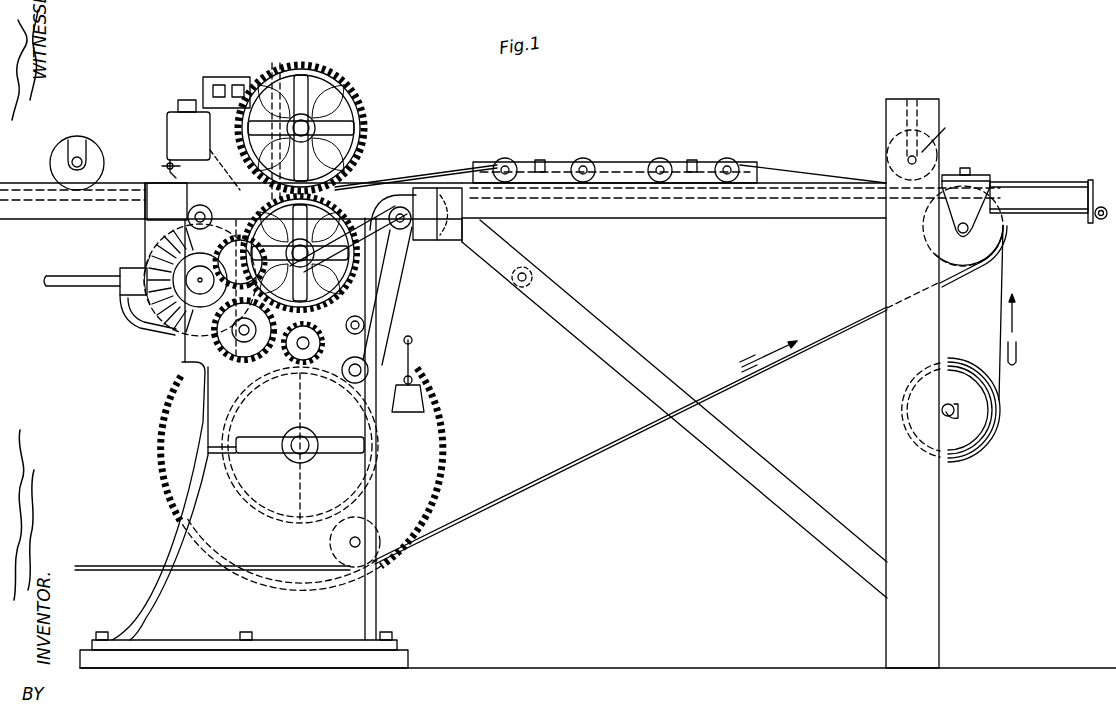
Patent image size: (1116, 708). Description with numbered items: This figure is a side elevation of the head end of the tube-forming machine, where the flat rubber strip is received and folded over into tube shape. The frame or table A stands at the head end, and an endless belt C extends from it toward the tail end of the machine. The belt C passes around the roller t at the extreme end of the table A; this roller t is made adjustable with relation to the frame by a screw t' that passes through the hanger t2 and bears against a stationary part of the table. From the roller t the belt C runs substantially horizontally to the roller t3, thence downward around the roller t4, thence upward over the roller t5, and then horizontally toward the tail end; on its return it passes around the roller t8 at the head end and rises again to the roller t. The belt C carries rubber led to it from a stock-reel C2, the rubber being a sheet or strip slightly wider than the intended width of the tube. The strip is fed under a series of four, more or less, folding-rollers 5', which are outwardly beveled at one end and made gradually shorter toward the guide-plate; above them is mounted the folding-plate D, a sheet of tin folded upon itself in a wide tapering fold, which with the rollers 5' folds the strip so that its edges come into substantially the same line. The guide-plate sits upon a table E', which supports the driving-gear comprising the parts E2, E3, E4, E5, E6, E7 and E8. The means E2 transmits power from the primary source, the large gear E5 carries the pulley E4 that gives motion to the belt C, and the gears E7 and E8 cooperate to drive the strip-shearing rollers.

The frame or table A is at (915, 383).
The endless belt C is at (574, 458).
The stock-reel C2 is at (972, 418).
The folding-plate D is at (632, 162).
The folding-rollers 5' is at (634, 153).
The roller t is at (963, 226).
The hanger t2 is at (982, 185).
The screw t' is at (1048, 215).
The roller t3 is at (403, 205).
The roller t4 is at (262, 485).
The roller t5 is at (190, 186).
The roller t8 is at (368, 560).
The table E' is at (245, 431).
The power-transmitting means E2 is at (123, 287).
The driving-gear part E3 is at (173, 317).
The pulley E4 is at (187, 303).
The large gear E5 is at (166, 426).
The driving-gear part E6 is at (228, 362).
The gear E7 is at (372, 270).
The gear E8 is at (350, 86).